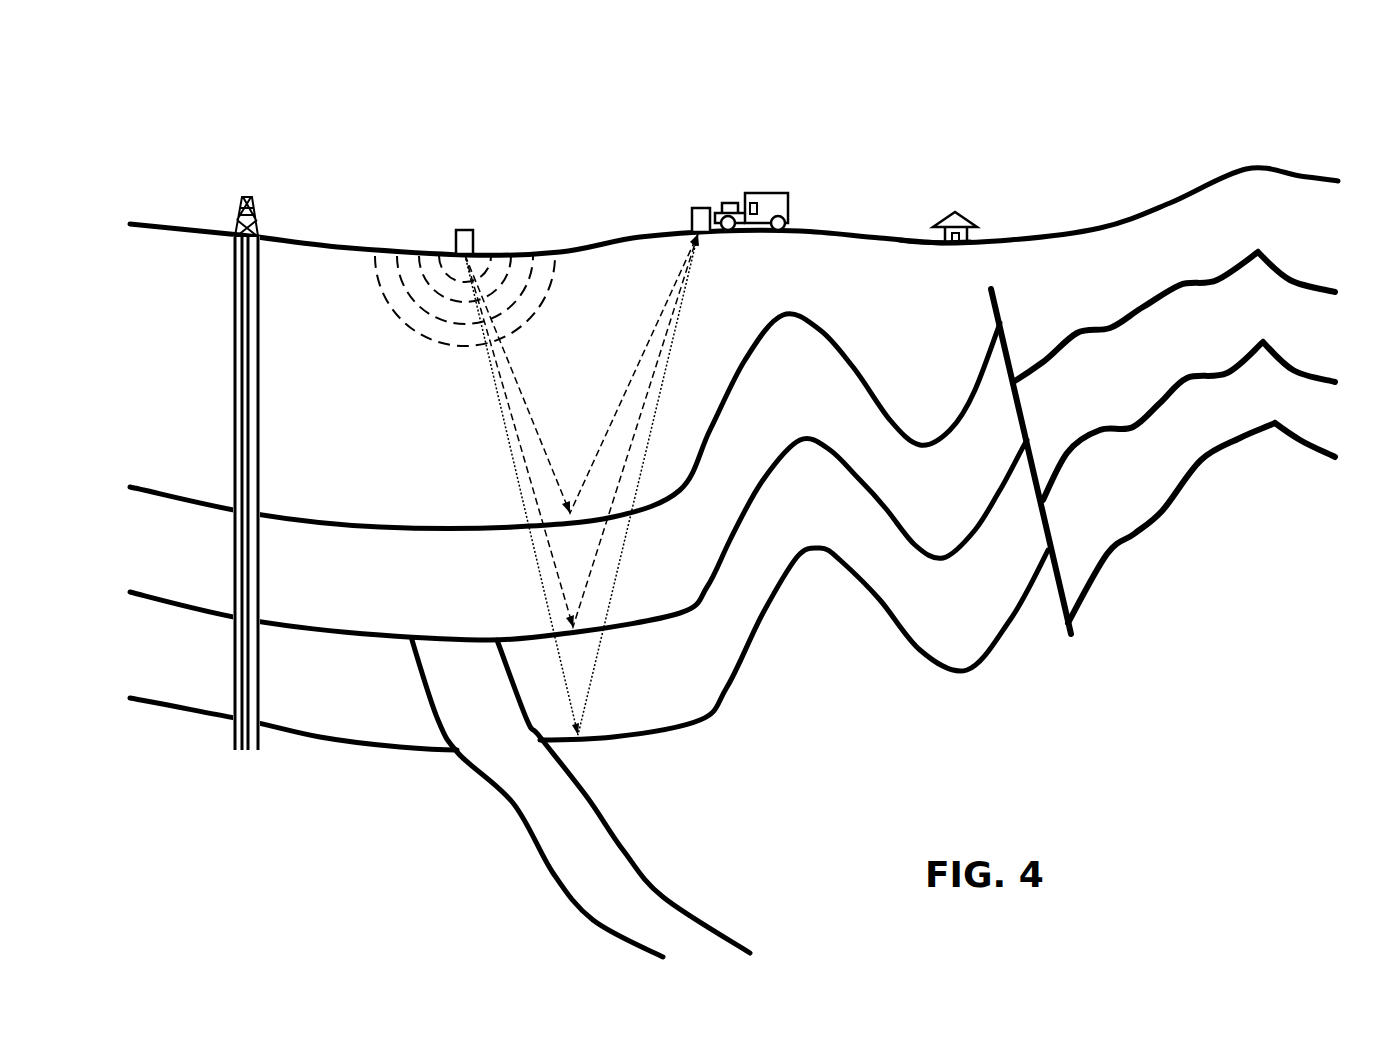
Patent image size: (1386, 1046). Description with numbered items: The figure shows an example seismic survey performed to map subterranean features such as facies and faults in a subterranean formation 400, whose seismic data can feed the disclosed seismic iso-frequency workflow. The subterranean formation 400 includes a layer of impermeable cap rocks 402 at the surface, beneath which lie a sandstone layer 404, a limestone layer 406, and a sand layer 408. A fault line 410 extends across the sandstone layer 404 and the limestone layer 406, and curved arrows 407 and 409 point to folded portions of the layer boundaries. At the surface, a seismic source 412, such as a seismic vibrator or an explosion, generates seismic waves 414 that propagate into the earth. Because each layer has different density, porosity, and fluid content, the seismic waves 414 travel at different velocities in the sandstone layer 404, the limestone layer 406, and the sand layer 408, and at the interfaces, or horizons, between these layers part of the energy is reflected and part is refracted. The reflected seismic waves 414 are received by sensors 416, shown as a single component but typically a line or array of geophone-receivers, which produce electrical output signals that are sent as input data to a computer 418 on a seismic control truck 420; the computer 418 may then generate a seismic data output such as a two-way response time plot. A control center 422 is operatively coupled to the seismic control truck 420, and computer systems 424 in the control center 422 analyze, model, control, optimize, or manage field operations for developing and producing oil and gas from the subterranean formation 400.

The subterranean formation 400 is at (220, 103).
The impermeable cap rocks 402 is at (182, 385).
The sandstone layer 404 is at (352, 588).
The limestone layer 406 is at (185, 663).
The anticline fold 407 is at (805, 357).
The sand layer 408 is at (579, 823).
The syncline fold 409 is at (995, 400).
The fault line 410 is at (1003, 310).
The seismic source 412 is at (465, 229).
The seismic waves 414 is at (385, 292).
The sensors 416 is at (700, 207).
The computer 418 is at (753, 203).
The seismic control truck 420 is at (765, 193).
The control center 422 is at (977, 227).
The computer systems 424 is at (937, 237).